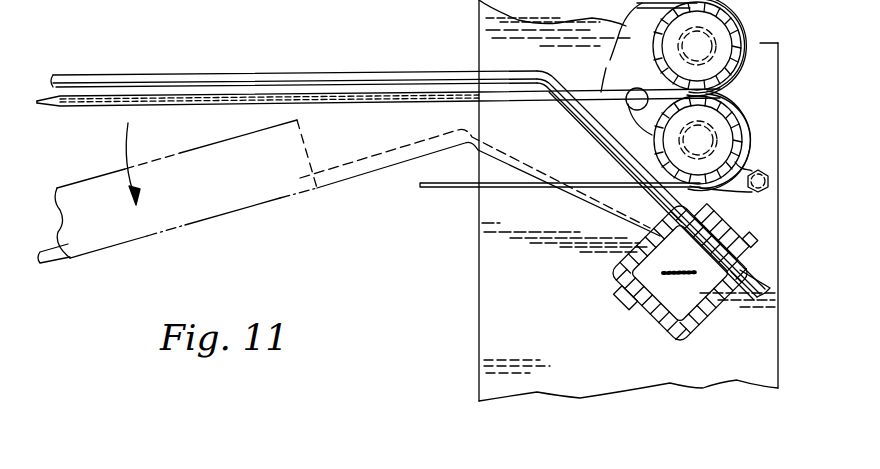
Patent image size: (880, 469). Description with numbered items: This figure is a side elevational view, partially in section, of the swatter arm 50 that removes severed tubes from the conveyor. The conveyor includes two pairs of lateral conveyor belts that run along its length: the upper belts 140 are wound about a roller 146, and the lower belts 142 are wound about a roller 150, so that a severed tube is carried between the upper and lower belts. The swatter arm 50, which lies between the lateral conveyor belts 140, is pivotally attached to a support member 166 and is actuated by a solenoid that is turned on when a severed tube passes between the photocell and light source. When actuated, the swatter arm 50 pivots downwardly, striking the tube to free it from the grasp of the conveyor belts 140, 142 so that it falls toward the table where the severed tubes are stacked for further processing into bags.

The swatter arm 50 is at (233, 74).
The upper lateral conveyor belts 140 is at (630, 26).
The lower lateral conveyor belts 142 is at (520, 184).
The roller 146 is at (743, 53).
The roller 150 is at (728, 147).
The support member 166 is at (755, 335).